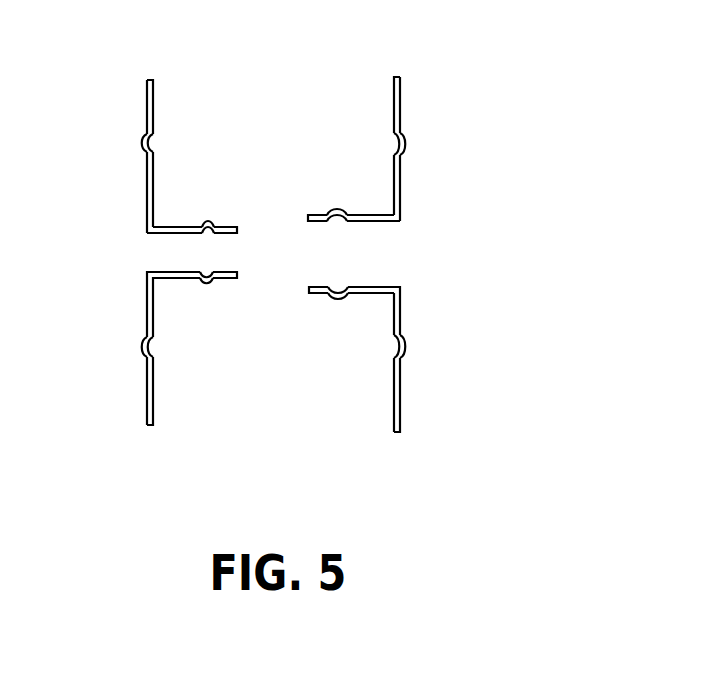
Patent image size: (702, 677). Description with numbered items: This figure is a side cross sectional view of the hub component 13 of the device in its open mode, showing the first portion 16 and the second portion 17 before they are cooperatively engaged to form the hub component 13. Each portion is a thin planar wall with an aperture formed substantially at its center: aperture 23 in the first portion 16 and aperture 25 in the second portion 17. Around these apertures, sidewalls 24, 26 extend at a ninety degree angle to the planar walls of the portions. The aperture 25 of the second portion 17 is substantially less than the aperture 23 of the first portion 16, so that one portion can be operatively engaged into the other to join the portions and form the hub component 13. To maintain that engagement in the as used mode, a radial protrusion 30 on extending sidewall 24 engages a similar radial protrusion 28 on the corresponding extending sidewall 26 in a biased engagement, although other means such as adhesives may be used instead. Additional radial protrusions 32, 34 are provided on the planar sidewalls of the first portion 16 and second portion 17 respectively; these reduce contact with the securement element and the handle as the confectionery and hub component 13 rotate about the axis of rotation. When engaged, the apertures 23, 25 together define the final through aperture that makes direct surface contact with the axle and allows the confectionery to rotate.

The hub component 13 is at (496, 293).
The first portion 16 is at (400, 125).
The second portion 17 is at (137, 171).
The aperture 23 is at (401, 328).
The sidewall 24 is at (370, 214).
The aperture 25 is at (73, 263).
The sidewall 26 is at (167, 279).
The radial protrusion 28 is at (332, 294).
The radial protrusion 30 is at (205, 223).
The radial protrusion 32 is at (405, 138).
The radial protrusion 34 is at (140, 147).